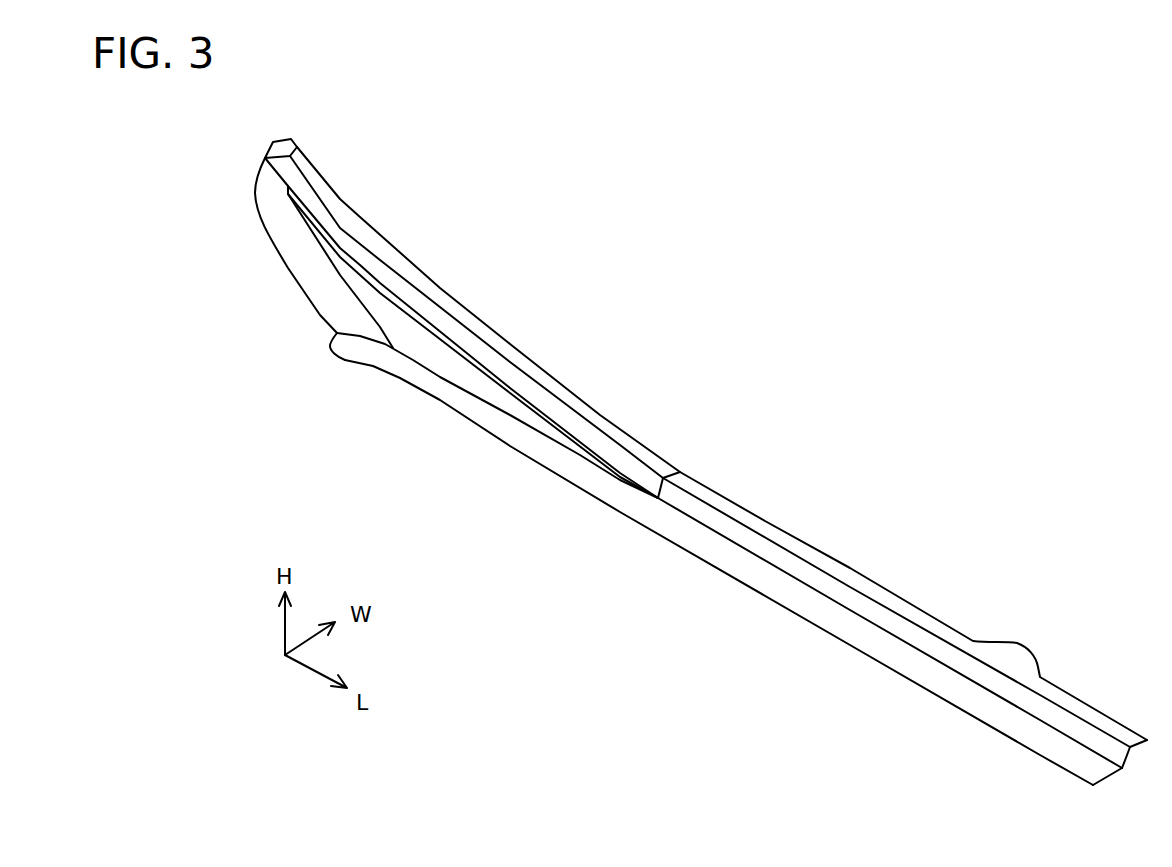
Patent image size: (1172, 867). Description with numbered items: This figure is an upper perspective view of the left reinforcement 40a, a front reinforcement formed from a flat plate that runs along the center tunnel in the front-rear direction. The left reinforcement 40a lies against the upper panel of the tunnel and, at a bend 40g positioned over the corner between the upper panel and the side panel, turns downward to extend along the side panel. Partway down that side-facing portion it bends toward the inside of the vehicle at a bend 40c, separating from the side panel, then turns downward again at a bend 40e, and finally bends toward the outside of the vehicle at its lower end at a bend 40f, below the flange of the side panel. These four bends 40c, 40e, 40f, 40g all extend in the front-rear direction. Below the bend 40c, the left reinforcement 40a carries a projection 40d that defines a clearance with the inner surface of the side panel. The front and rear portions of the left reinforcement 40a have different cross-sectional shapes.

The left reinforcement 40a is at (312, 283).
The bend 40c is at (330, 237).
The projection 40d is at (408, 338).
The bend 40e is at (365, 277).
The bend 40f is at (452, 382).
The bend 40g is at (422, 290).